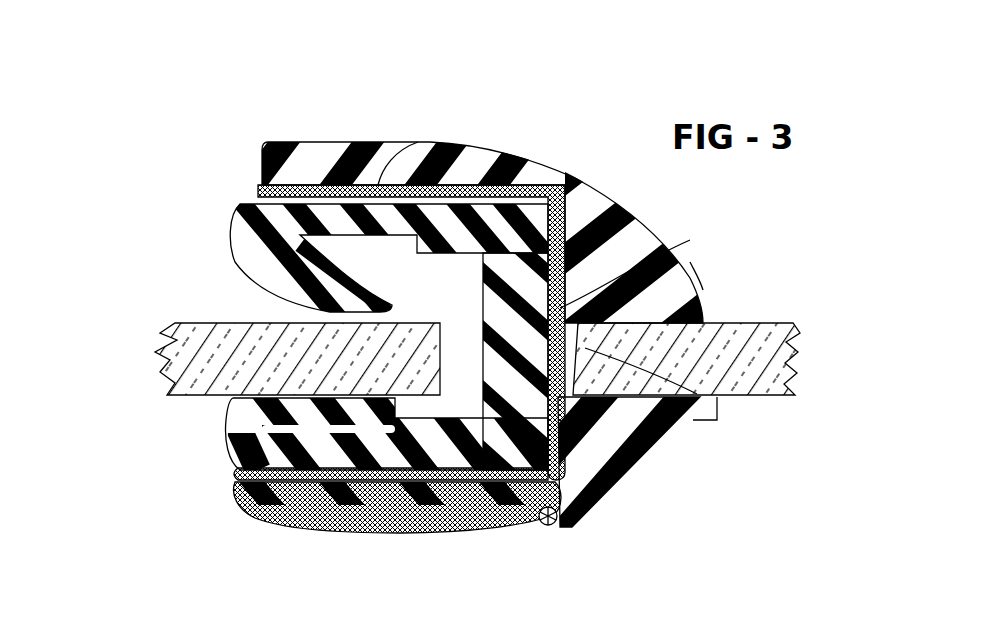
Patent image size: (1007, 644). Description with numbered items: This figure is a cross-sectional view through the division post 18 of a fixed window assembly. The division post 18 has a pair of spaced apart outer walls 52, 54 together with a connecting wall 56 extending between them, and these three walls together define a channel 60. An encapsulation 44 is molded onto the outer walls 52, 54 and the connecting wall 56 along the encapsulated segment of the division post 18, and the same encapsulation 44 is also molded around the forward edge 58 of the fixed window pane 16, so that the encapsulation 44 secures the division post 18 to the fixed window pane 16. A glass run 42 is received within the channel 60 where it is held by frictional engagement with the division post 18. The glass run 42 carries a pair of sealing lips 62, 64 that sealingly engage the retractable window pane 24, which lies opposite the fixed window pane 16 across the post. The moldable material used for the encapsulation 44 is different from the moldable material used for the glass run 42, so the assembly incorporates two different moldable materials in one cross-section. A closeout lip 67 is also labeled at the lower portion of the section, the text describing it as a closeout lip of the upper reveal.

The fixed window pane 16 is at (744, 323).
The division post 18 is at (545, 205).
The retractable window pane 24 is at (207, 322).
The glass run 42 is at (477, 320).
The encapsulation 44 is at (625, 500).
The outer wall 52 is at (412, 143).
The outer wall 54 is at (380, 527).
The connecting wall 56 is at (688, 268).
The forward edge 58 is at (695, 420).
The channel 60 is at (563, 285).
The sealing lip 62 is at (268, 297).
The sealing lip 64 is at (233, 497).
The second closeout lip 67 is at (598, 643).